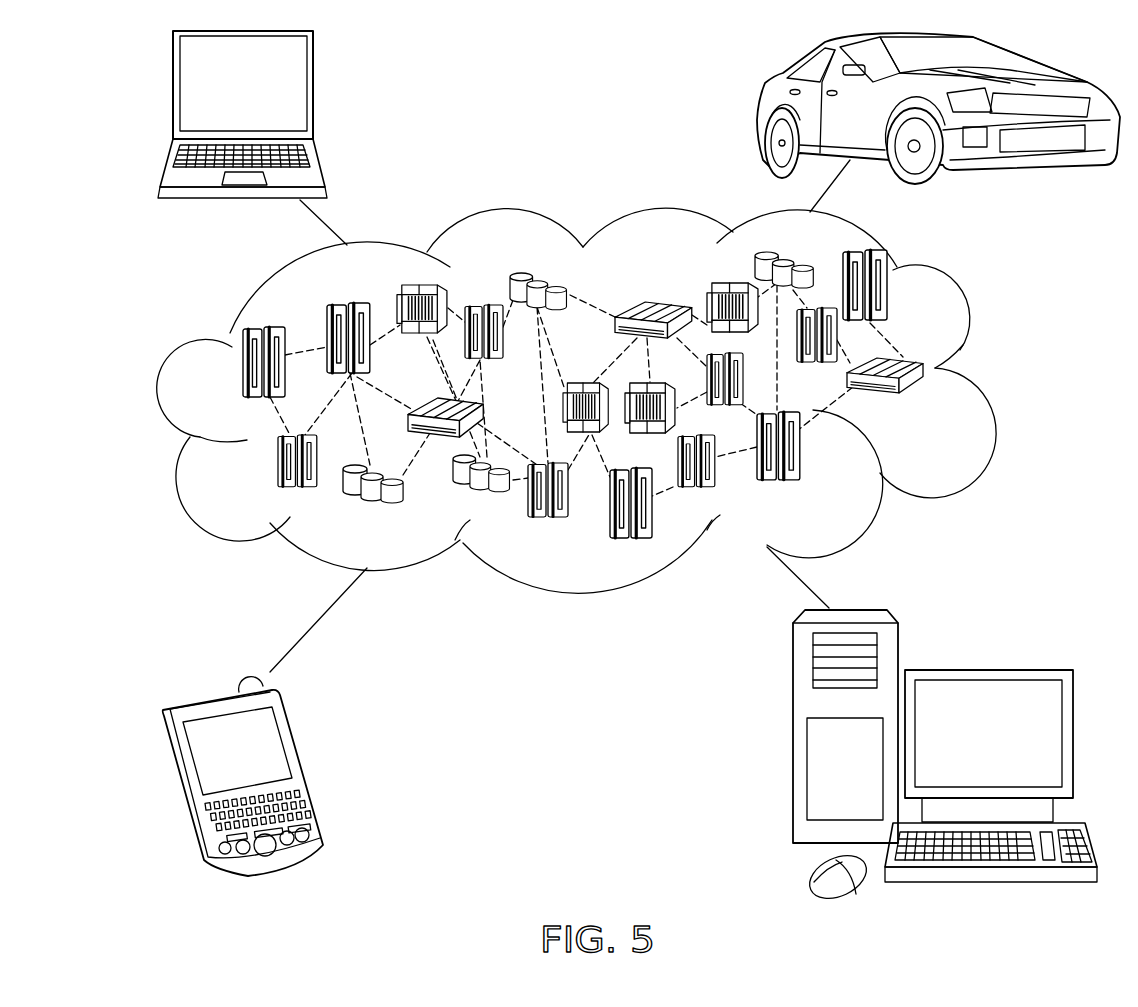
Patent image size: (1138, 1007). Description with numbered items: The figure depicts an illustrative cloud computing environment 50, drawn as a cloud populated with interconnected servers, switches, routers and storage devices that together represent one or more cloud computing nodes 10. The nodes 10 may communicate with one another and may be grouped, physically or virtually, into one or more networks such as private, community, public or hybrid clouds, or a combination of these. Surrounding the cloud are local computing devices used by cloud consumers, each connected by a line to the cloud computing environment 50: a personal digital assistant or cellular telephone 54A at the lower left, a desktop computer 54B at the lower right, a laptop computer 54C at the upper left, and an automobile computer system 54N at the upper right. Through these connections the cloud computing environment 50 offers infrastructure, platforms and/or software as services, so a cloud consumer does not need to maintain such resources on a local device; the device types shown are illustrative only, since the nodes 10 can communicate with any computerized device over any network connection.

The cloud computing node 10 is at (937, 408).
The cloud computing environment 50 is at (983, 372).
The personal digital assistant or cellular telephone 54A is at (303, 760).
The desktop computer 54B is at (985, 668).
The laptop computer 54C is at (313, 92).
The automobile computer system 54N is at (760, 110).